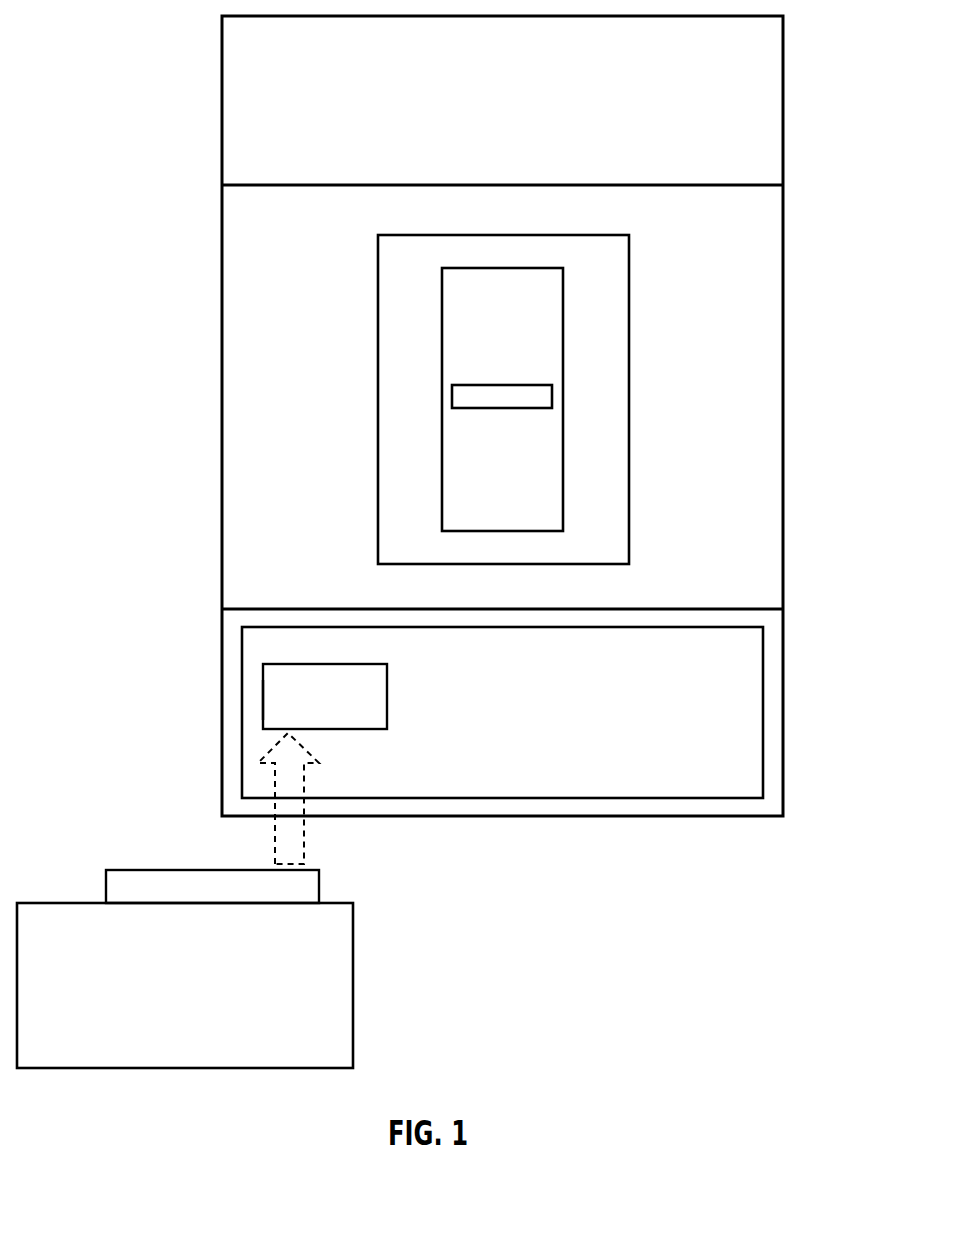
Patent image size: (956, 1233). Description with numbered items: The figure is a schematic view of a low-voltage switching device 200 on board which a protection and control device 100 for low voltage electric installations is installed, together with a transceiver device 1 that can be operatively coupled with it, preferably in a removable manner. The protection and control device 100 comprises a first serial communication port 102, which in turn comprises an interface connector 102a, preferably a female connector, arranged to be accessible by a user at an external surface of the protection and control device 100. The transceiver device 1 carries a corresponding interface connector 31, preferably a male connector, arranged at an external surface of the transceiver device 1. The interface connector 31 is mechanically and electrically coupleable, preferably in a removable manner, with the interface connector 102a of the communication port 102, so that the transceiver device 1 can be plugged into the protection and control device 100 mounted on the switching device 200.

The switching device 200 is at (197, 313).
The protection and control device 100 is at (765, 713).
The first serial communication port 102 is at (395, 697).
The interface connector 102a is at (268, 700).
The interface connector 31 is at (106, 888).
The transceiver device 1 is at (362, 977).